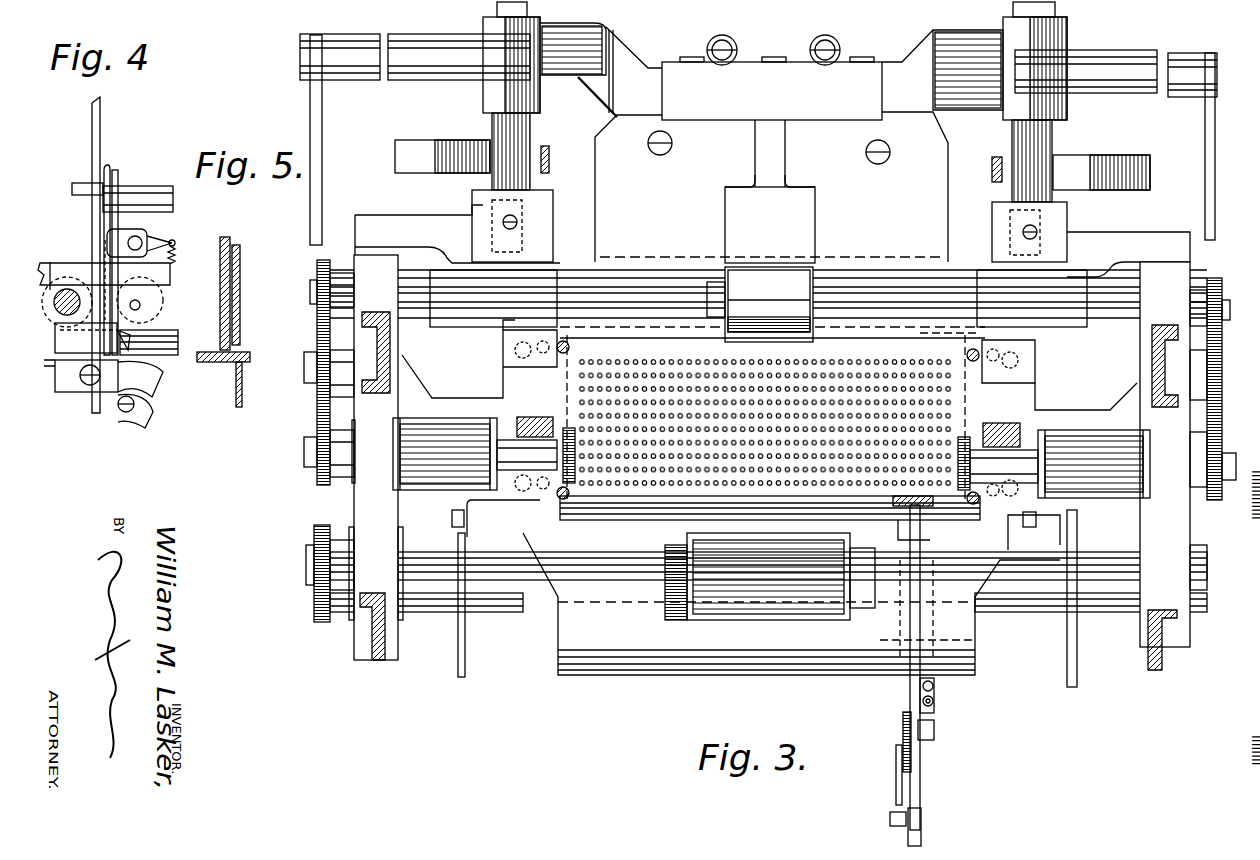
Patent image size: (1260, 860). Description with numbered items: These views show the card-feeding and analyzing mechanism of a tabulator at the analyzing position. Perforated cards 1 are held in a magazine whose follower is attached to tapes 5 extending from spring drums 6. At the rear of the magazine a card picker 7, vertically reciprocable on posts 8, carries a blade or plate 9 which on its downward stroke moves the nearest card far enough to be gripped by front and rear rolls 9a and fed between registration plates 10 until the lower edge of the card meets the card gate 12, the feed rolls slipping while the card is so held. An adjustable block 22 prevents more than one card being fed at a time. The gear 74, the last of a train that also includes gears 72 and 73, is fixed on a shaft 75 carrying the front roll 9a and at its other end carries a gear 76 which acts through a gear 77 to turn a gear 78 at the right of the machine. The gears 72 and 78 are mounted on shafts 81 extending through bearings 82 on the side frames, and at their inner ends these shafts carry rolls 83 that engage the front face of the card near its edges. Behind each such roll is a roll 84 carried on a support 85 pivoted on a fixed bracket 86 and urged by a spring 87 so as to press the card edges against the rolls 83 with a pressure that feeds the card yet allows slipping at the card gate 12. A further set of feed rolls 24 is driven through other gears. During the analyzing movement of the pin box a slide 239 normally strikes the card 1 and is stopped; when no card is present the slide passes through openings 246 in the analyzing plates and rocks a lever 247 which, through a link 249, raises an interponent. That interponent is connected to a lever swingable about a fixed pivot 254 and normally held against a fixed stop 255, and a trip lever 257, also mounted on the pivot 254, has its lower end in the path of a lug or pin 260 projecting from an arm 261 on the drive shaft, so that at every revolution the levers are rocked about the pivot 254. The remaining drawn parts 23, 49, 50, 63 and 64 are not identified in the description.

In FIG. 3, the cards 1 is at (985, 392).
In FIG. 4, the cards 1 is at (108, 167).
In FIG. 5, the cards 1 is at (232, 242).
In FIG. 3, the tapes 5 is at (551, 160).
In FIG. 3, the spring drums 6 is at (432, 173).
In FIG. 3, the card picker 7 is at (771, 142).
In FIG. 3, the posts 8 is at (531, 138).
In FIG. 3, the blade or plate 9 is at (870, 64).
In FIG. 3, the front and rear rolls 9a is at (760, 304).
In FIG. 3, the registration plates 10 is at (528, 358).
In FIG. 5, the registration plates 10 is at (240, 266).
In FIG. 3, the card gate 12 is at (1056, 522).
In FIG. 4, the card gate 12 is at (80, 394).
In FIG. 3, the adjustable block 22 is at (770, 191).
In FIG. 3, the plate 23 is at (612, 663).
In FIG. 3, the feed rolls 24 is at (665, 600).
In FIG. 3, the bar 49 is at (322, 133).
In FIG. 3, the roller 50 is at (428, 80).
In FIG. 3, the block 63 is at (769, 421).
In FIG. 4, the block 63 is at (170, 279).
In FIG. 4, the arm 64 is at (160, 395).
In FIG. 3, the gear 72 is at (317, 426).
In FIG. 3, the gear 73 is at (317, 335).
In FIG. 3, the gear 74 is at (317, 275).
In FIG. 3, the shaft 75 is at (514, 300).
In FIG. 3, the gear 76 is at (1222, 296).
In FIG. 3, the gear 77 is at (1222, 376).
In FIG. 3, the gear 78 is at (1222, 450).
In FIG. 3, the shafts 81 is at (767, 461).
In FIG. 4, the shafts 81 is at (68, 288).
In FIG. 3, the bearings 82 is at (771, 458).
In FIG. 3, the rolls 83 is at (575, 418).
In FIG. 4, the rolls 83 is at (52, 262).
In FIG. 4, the roll 84 is at (160, 340).
In FIG. 4, the support 85 is at (143, 298).
In FIG. 4, the fixed bracket 86 is at (175, 243).
In FIG. 4, the spring 87 is at (176, 258).
In FIG. 3, the slide 239 is at (930, 510).
In FIG. 5, the slide 239 is at (206, 352).
In FIG. 3, the openings 246 is at (892, 516).
In FIG. 3, the lever 247 is at (922, 545).
In FIG. 4, the lever 247 is at (150, 420).
In FIG. 3, the link 249 is at (956, 610).
In FIG. 3, the fixed pivot 254 is at (912, 762).
In FIG. 3, the fixed stop 255 is at (925, 738).
In FIG. 3, the trip lever 257 is at (896, 790).
In FIG. 3, the lug or pin 260 is at (890, 818).
In FIG. 3, the arm 261 is at (922, 818).